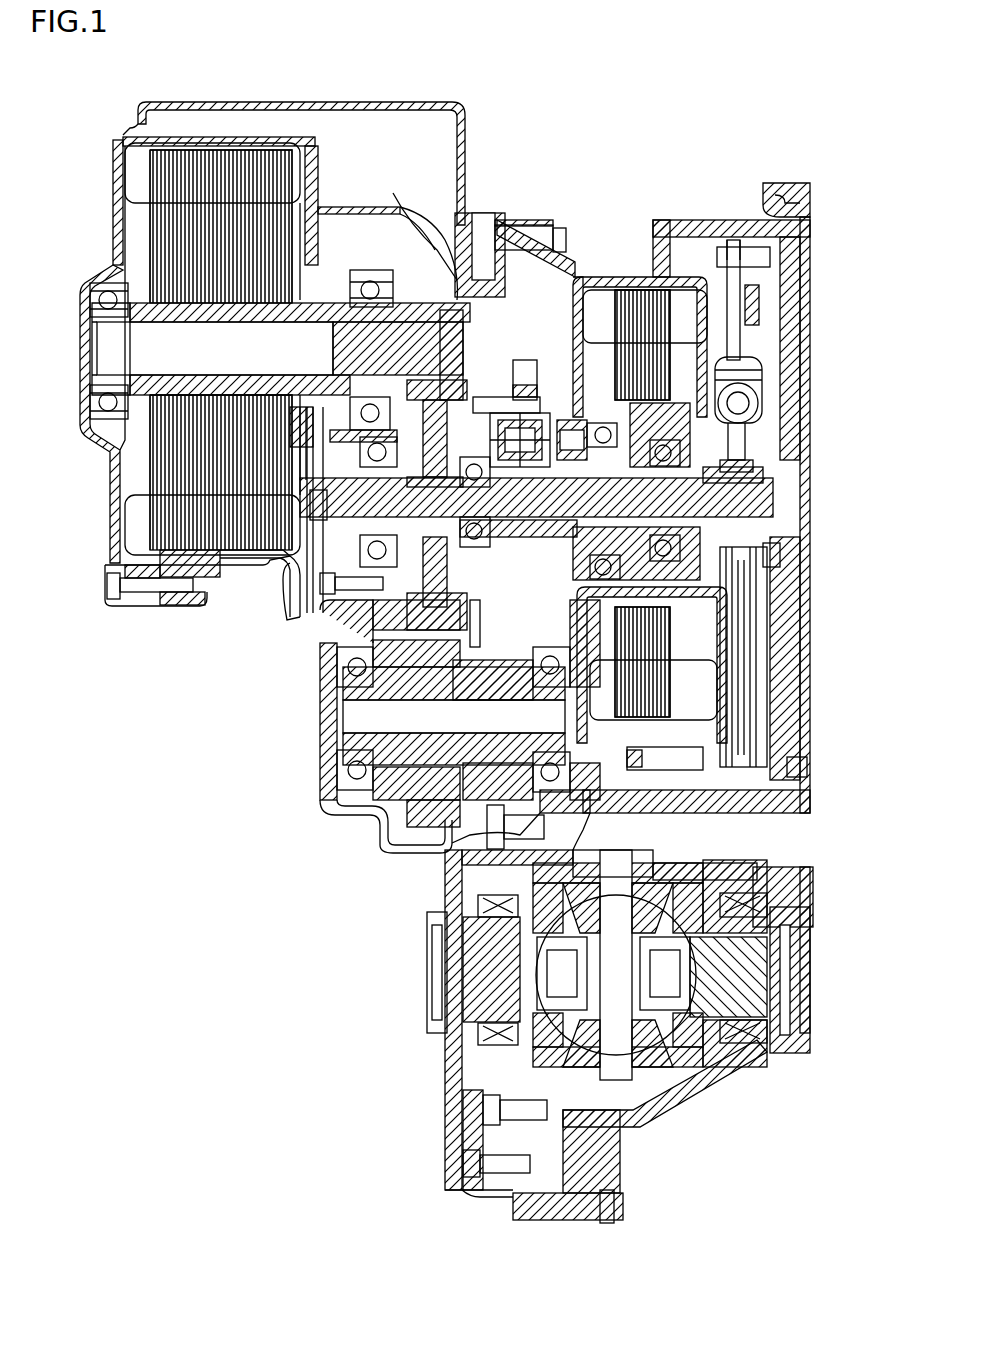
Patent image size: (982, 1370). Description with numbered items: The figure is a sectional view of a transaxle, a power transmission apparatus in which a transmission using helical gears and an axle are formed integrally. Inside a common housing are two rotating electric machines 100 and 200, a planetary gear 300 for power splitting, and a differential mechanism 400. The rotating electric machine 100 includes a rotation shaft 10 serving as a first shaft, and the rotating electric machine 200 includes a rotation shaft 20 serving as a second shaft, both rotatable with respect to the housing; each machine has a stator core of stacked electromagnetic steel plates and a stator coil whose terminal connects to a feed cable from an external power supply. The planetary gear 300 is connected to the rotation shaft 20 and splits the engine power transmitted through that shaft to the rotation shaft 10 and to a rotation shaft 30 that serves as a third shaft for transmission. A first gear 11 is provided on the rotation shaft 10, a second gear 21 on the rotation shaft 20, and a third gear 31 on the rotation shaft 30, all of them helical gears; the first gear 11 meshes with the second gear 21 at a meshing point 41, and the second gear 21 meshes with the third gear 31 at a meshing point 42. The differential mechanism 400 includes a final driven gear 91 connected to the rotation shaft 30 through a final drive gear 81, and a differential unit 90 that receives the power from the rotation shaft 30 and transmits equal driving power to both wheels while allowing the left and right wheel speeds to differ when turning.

The rotating electric machine 100 is at (238, 124).
The rotation shaft 10 is at (147, 300).
The first gear 11 is at (440, 312).
The meshing point 41 is at (455, 435).
The second gear 21 is at (535, 400).
The planetary gear 300 is at (553, 394).
The rotating electric machine 200 is at (641, 256).
The rotation shaft 20 is at (762, 502).
The meshing point 42 is at (395, 606).
The third gear 31 is at (410, 645).
The rotation shaft 30 is at (370, 693).
The final drive gear 81 is at (445, 731).
The final driven gear 91 is at (478, 815).
The differential unit 90 is at (487, 973).
The differential mechanism 400 is at (710, 1103).